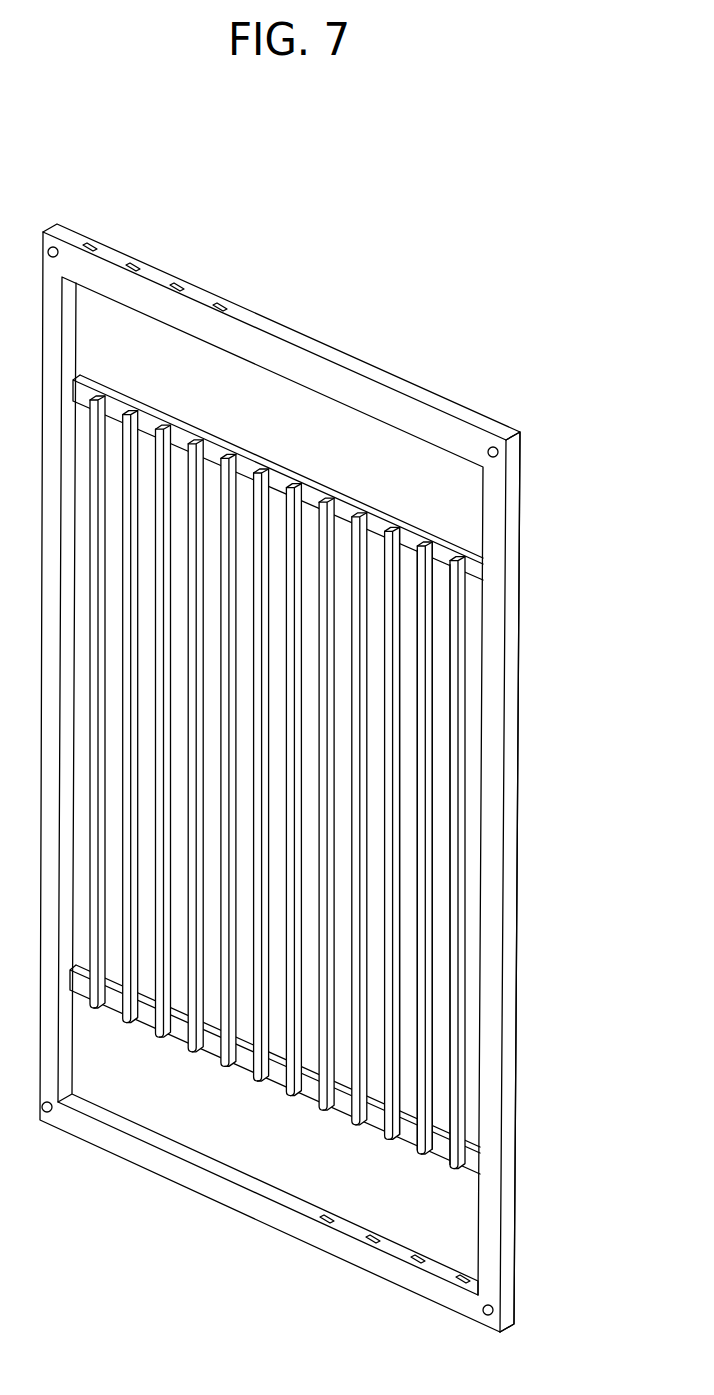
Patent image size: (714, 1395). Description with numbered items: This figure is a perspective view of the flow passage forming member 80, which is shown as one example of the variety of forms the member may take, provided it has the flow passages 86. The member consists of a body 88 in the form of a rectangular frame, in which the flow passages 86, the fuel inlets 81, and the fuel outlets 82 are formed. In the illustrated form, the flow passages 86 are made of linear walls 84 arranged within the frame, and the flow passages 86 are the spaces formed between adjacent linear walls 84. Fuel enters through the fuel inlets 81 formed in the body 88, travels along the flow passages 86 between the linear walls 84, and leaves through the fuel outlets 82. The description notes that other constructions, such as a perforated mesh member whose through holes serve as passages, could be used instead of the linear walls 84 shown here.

The flow passage forming member 80 is at (327, 316).
The fuel inlets 81 is at (175, 283).
The fuel outlets 82 is at (370, 1242).
The linear walls 84 is at (425, 800).
The flow passages 86 is at (405, 693).
The body 88 is at (510, 1053).